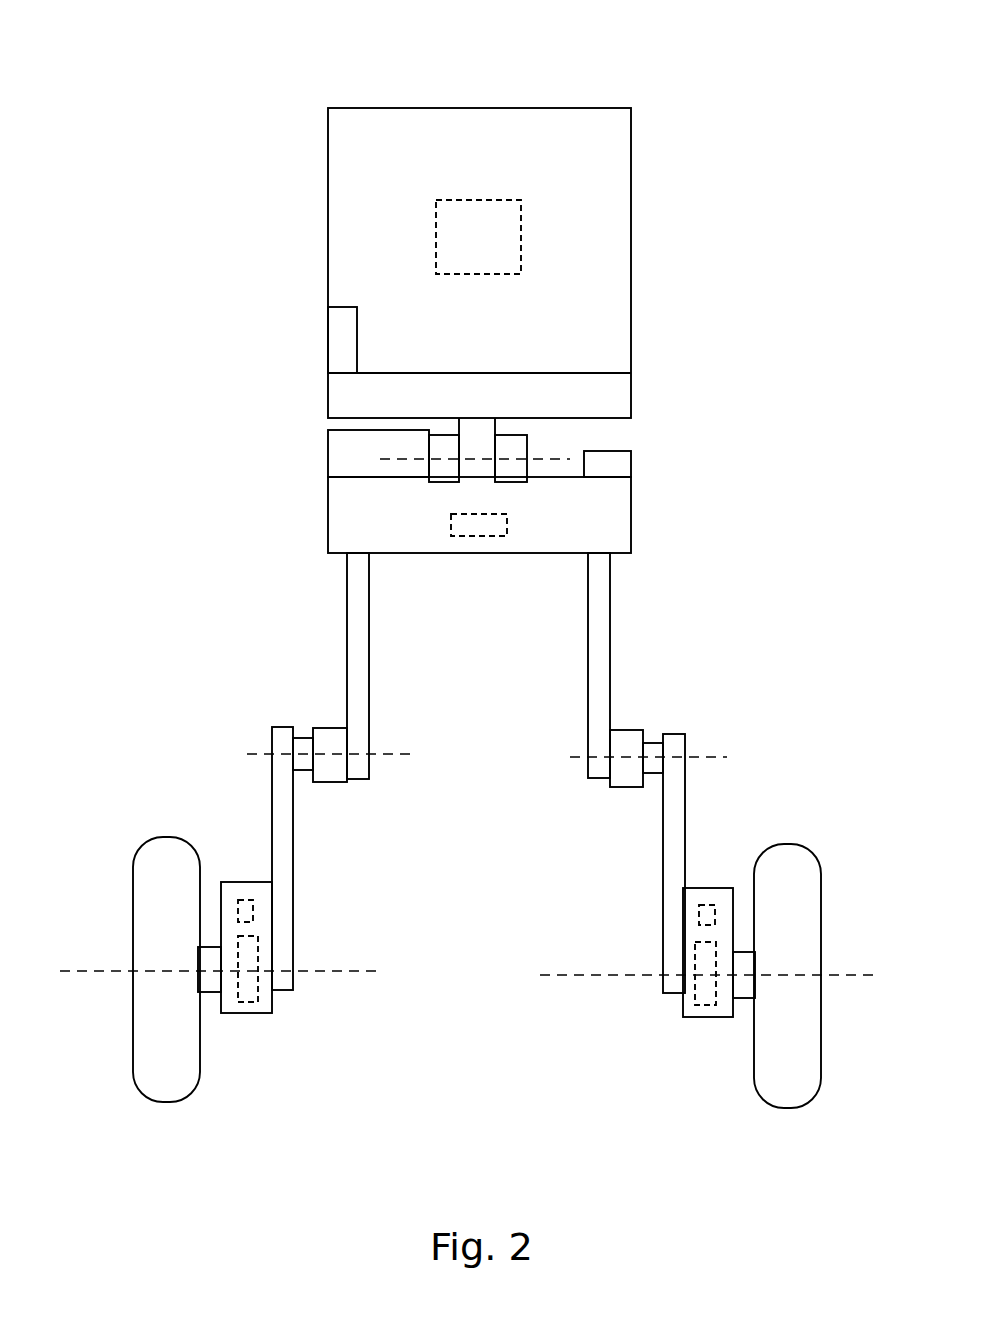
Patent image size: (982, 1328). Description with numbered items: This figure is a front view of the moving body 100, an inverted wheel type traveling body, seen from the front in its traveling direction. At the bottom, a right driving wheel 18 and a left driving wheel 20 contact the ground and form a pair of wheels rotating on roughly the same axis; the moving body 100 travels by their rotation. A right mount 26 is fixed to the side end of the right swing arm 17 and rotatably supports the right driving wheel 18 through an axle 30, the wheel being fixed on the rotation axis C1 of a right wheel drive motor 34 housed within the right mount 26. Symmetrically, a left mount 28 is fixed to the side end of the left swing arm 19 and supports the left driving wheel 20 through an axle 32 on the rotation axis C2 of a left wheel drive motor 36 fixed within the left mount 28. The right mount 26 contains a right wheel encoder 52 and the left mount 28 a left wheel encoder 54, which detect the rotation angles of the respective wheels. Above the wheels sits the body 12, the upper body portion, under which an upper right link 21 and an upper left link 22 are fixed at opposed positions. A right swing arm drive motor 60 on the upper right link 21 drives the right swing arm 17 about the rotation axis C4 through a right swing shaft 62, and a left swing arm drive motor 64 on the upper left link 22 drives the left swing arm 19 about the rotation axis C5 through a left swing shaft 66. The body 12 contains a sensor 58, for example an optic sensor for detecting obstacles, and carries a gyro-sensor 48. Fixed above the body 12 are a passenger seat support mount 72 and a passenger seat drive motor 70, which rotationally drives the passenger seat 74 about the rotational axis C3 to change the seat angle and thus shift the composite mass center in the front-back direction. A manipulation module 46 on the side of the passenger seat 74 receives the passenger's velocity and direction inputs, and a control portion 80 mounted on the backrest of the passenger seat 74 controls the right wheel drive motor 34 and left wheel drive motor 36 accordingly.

The moving body 100 is at (785, 29).
The body 12 is at (622, 535).
The right swing arm 17 is at (270, 828).
The right driving wheel 18 is at (175, 1102).
The left swing arm 19 is at (685, 808).
The left driving wheel 20 is at (792, 1108).
The upper right link 21 is at (350, 643).
The upper left link 22 is at (610, 663).
The right mount 26 is at (270, 1013).
The left mount 28 is at (683, 1017).
The axle 30 is at (208, 992).
The axle 32 is at (743, 998).
The right wheel drive motor 34 is at (248, 1002).
The left wheel drive motor 36 is at (703, 1005).
The manipulation module 46 is at (337, 337).
The gyro-sensor 48 is at (631, 459).
The right wheel encoder 52 is at (242, 900).
The left wheel encoder 54 is at (710, 905).
The sensor 58 is at (492, 536).
The right swing arm drive motor 60 is at (330, 775).
The right swing shaft 62 is at (300, 743).
The left swing arm drive motor 64 is at (630, 778).
The left swing shaft 66 is at (650, 753).
The passenger seat drive motor 70 is at (328, 455).
The passenger seat support mount 72 is at (513, 446).
The passenger seat 74 is at (631, 220).
The control portion 80 is at (507, 198).
The rotation axis C1 is at (87, 970).
The rotation axis C2 is at (850, 975).
The rotational axis C3 is at (555, 459).
The rotation axis C4 is at (246, 752).
The rotation axis C5 is at (704, 757).